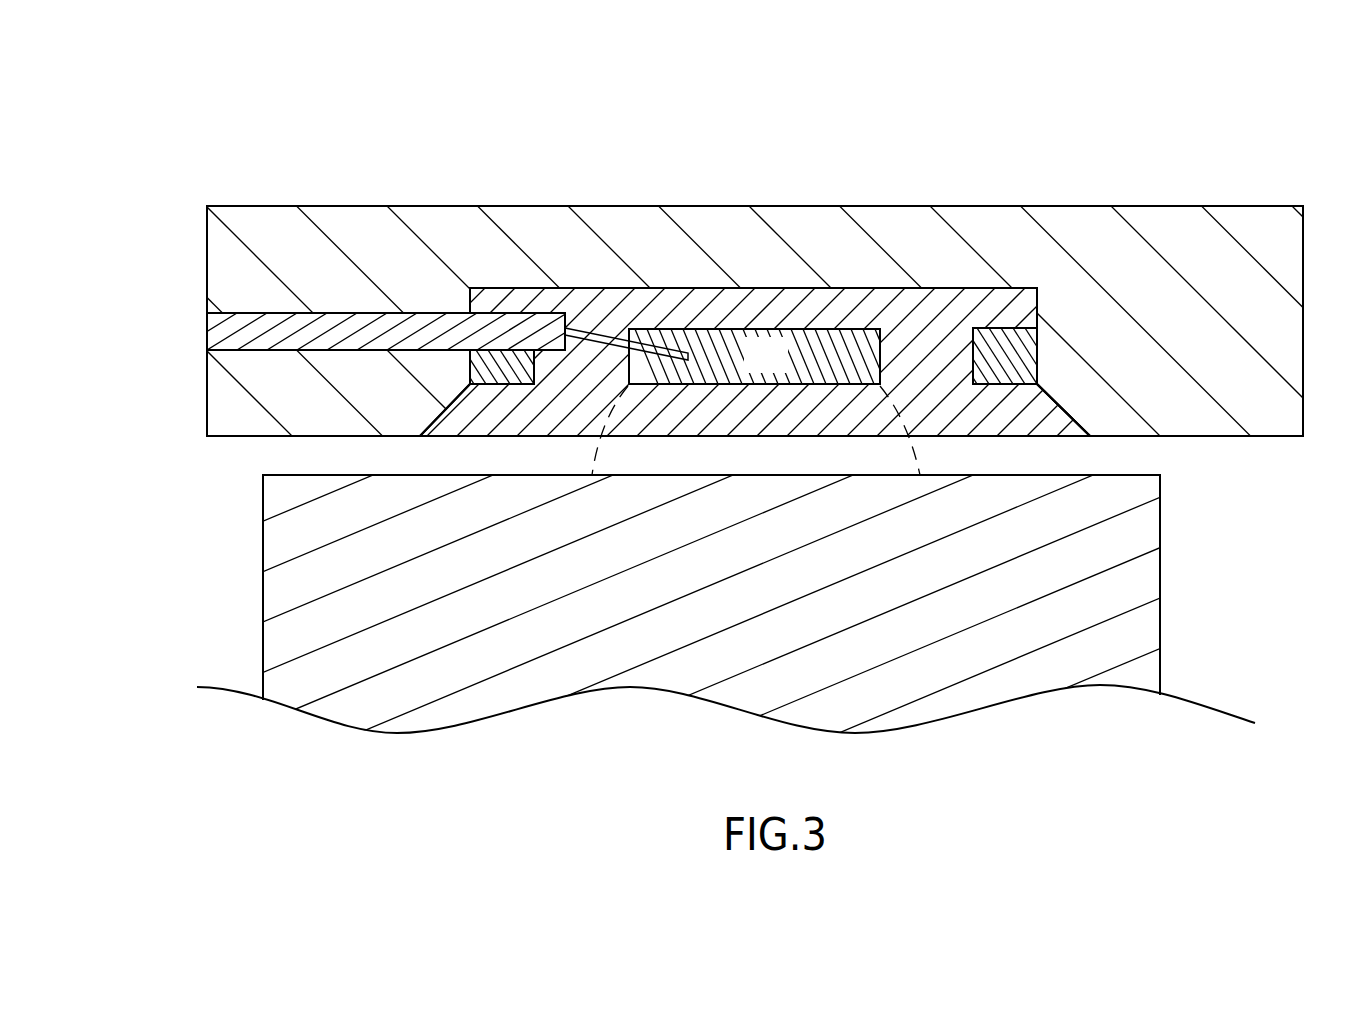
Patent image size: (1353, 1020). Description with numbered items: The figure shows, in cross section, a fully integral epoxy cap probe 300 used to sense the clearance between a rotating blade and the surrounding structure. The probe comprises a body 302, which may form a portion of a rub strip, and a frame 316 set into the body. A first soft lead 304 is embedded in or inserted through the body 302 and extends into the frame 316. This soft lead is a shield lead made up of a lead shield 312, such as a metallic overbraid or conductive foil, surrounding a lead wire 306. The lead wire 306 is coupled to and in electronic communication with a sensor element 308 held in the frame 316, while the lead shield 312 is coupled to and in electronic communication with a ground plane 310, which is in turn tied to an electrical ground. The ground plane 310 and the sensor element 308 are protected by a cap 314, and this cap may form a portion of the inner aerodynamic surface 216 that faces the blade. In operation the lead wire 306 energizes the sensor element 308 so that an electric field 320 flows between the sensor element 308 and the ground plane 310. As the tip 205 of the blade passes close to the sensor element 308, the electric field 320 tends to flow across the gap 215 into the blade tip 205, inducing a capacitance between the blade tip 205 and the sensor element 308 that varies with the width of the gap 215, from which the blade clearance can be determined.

The fully integral epoxy cap probe 300 is at (1131, 151).
The body 302 is at (743, 260).
The first soft lead 304 is at (366, 332).
The lead wire 306 is at (607, 338).
The sensor element 308 is at (777, 366).
The ground plane 310 is at (466, 371).
The lead shield 312 is at (522, 313).
The cap 314 is at (1060, 413).
The frame 316 is at (923, 304).
The electric field 320 is at (905, 415).
The tip 205 is at (749, 532).
The gap 215 is at (540, 457).
The inner aerodynamic surface 216 is at (401, 436).